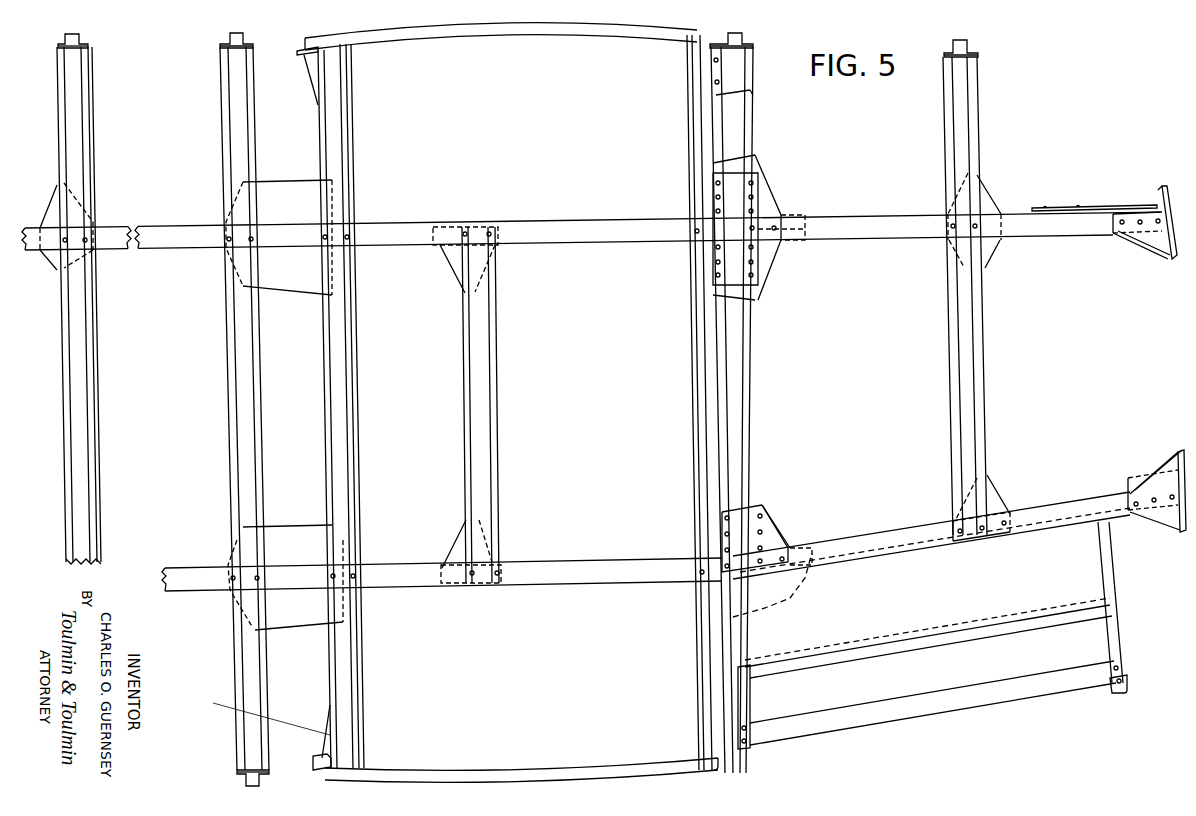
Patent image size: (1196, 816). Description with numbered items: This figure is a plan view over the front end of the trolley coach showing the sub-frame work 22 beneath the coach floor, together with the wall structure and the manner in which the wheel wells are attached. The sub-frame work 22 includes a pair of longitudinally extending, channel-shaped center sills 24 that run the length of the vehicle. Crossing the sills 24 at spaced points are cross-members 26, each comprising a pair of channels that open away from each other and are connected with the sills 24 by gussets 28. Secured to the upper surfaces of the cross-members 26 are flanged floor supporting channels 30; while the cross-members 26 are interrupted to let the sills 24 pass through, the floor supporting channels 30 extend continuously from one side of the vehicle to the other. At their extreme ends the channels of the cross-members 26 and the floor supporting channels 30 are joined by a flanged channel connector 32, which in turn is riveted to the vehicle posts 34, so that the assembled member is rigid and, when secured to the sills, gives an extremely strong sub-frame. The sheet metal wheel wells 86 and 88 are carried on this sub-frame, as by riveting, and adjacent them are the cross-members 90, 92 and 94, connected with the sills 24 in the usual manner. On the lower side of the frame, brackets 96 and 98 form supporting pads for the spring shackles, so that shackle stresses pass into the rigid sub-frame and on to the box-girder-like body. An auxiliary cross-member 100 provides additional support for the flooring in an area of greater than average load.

The sub-frame work 22 is at (526, 218).
The center sill 24 is at (190, 250).
The cross-member 26 is at (100, 455).
The gusset 28 is at (58, 205).
The flanged floor supporting channel 30 is at (82, 375).
The flanged channel connector 32 is at (85, 47).
The vehicle post 34 is at (80, 45).
The wheel well 86 is at (516, 666).
The wheel well 88 is at (496, 136).
The cross-member 90 is at (230, 450).
The cross-member 92 is at (332, 445).
The cross-member 94 is at (746, 447).
The bracket 96 is at (286, 182).
The bracket 98 is at (777, 192).
The auxiliary cross-member 100 is at (490, 452).